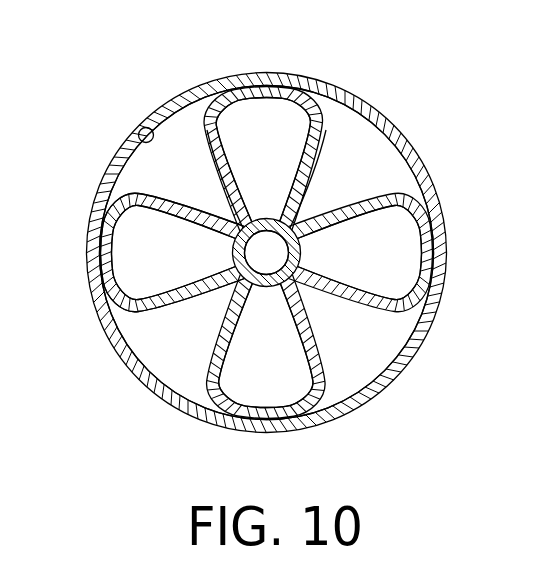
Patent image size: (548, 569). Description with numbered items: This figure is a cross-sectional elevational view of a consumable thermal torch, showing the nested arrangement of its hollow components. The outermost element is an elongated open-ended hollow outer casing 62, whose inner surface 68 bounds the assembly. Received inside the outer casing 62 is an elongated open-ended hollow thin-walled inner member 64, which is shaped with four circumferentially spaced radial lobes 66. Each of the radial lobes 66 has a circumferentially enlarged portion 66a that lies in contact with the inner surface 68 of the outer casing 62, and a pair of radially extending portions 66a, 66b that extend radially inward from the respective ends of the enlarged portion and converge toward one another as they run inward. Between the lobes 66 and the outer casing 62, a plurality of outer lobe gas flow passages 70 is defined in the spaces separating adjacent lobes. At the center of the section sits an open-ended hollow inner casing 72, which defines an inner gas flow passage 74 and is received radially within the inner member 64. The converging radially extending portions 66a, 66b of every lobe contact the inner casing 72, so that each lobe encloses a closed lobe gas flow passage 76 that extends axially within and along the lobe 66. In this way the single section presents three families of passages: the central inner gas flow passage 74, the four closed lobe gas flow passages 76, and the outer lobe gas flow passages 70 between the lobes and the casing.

The outer casing 62 is at (187, 93).
The inner member 64 is at (163, 308).
The radial lobes 66 is at (332, 150).
The circumferentially enlarged portion 66a is at (252, 87).
The radially extending portion 66b is at (311, 163).
The inner surface 68 is at (142, 126).
The outer lobe gas flow passages 70 is at (137, 176).
The inner casing 72 is at (265, 286).
The inner gas flow passage 74 is at (263, 254).
The closed lobe gas flow passage 76 is at (277, 120).